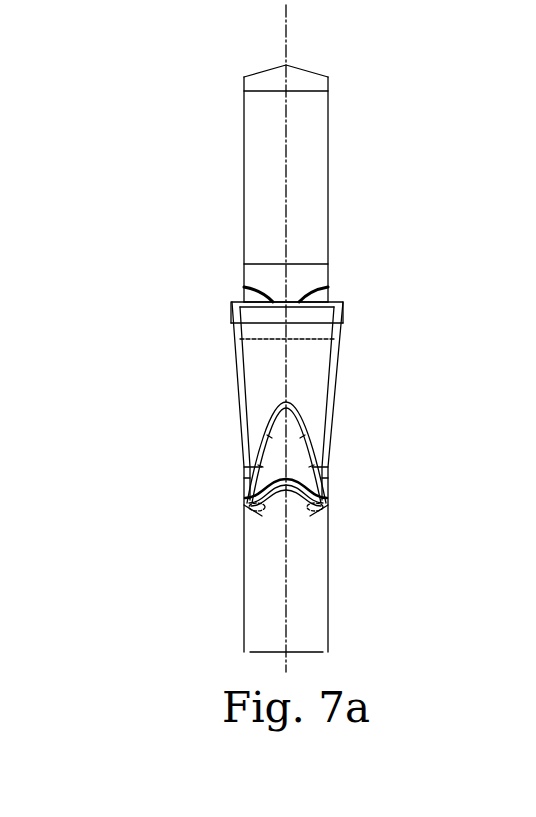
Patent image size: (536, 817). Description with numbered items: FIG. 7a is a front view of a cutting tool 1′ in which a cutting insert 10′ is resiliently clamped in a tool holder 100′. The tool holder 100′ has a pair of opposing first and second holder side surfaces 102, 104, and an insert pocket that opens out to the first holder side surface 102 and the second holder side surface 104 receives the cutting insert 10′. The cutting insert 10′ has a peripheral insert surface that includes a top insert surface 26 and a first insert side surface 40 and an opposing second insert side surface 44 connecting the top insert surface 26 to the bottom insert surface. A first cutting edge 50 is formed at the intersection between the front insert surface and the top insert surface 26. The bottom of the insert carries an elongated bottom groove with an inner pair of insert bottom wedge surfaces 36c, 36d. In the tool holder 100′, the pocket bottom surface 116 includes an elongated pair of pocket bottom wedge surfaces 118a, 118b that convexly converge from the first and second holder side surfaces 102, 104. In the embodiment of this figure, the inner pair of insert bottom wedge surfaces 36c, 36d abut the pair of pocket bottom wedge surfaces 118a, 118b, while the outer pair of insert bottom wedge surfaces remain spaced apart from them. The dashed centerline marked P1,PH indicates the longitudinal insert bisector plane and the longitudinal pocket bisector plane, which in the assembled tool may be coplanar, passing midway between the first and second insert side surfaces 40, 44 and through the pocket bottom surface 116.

The longitudinal insert bisector plane / longitudinal pocket bisector plane P1,PH is at (287, 22).
The tool holder 100′ is at (184, 70).
The cutting tool 1′ is at (155, 112).
The cutting insert 10′ is at (150, 356).
The first holder side surface 102 is at (328, 108).
The second holder side surface 104 is at (244, 143).
The top insert surface 26 is at (237, 296).
The first cutting edge 50 is at (317, 308).
The first insert side surface 40 is at (341, 387).
The second insert side surface 44 is at (238, 372).
The inner insert bottom wedge surface 36d is at (243, 500).
The inner insert bottom wedge surface 36c is at (328, 502).
The pocket bottom surface 116 is at (232, 503).
The pocket bottom wedge surface 118b is at (244, 510).
The pocket bottom wedge surface 118a is at (331, 510).